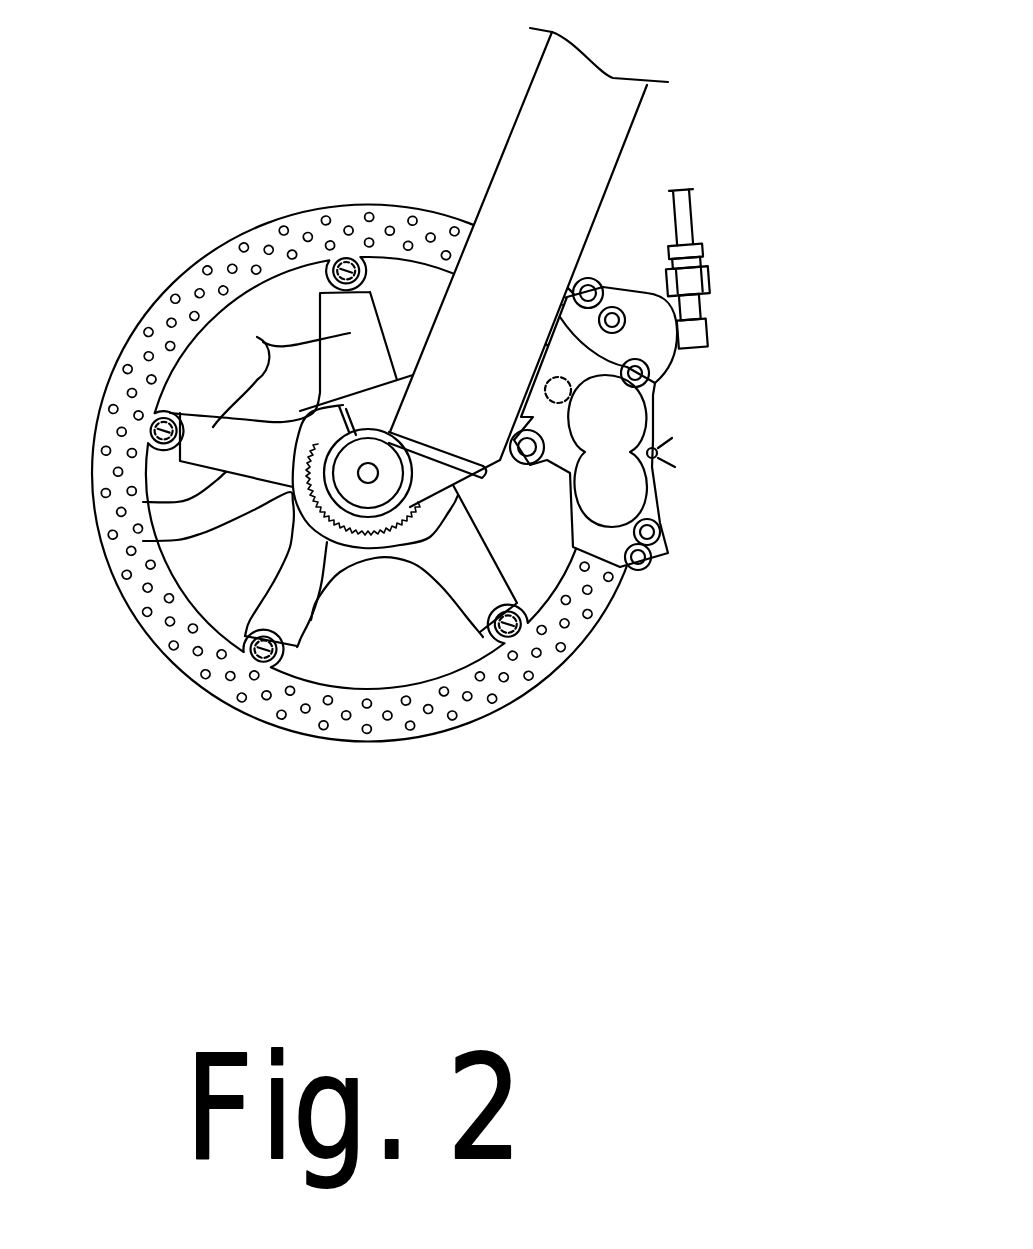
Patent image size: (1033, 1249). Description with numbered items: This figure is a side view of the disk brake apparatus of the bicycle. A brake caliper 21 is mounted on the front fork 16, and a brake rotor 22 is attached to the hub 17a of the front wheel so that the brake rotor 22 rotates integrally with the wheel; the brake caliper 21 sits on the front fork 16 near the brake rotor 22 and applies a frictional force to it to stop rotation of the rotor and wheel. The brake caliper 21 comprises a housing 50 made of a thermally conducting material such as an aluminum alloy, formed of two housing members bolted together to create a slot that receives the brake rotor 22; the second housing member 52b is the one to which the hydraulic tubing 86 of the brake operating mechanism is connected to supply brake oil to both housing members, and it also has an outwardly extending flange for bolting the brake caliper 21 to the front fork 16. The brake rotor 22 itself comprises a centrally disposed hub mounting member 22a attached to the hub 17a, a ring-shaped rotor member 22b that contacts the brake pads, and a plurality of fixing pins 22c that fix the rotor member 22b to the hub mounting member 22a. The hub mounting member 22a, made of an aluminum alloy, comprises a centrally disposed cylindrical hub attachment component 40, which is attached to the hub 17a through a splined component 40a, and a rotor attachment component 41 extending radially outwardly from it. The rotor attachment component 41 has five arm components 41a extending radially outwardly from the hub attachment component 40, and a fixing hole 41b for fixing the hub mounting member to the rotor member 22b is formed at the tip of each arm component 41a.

The front fork 16 is at (602, 143).
The hub 17a is at (373, 537).
The brake caliper 21 is at (630, 456).
The brake rotor 22 is at (342, 432).
The hub mounting member 22a is at (265, 578).
The rotor member 22b is at (140, 593).
The fixing pins 22c is at (357, 253).
The hub attachment component 40 is at (282, 555).
The splined component 40a is at (357, 537).
The rotor attachment component 41 is at (143, 502).
The arm components 41a is at (257, 340).
The fixing hole 41b is at (344, 256).
The housing 50 is at (676, 450).
The second housing member 52b is at (668, 565).
The hydraulic tubing 86 is at (685, 217).